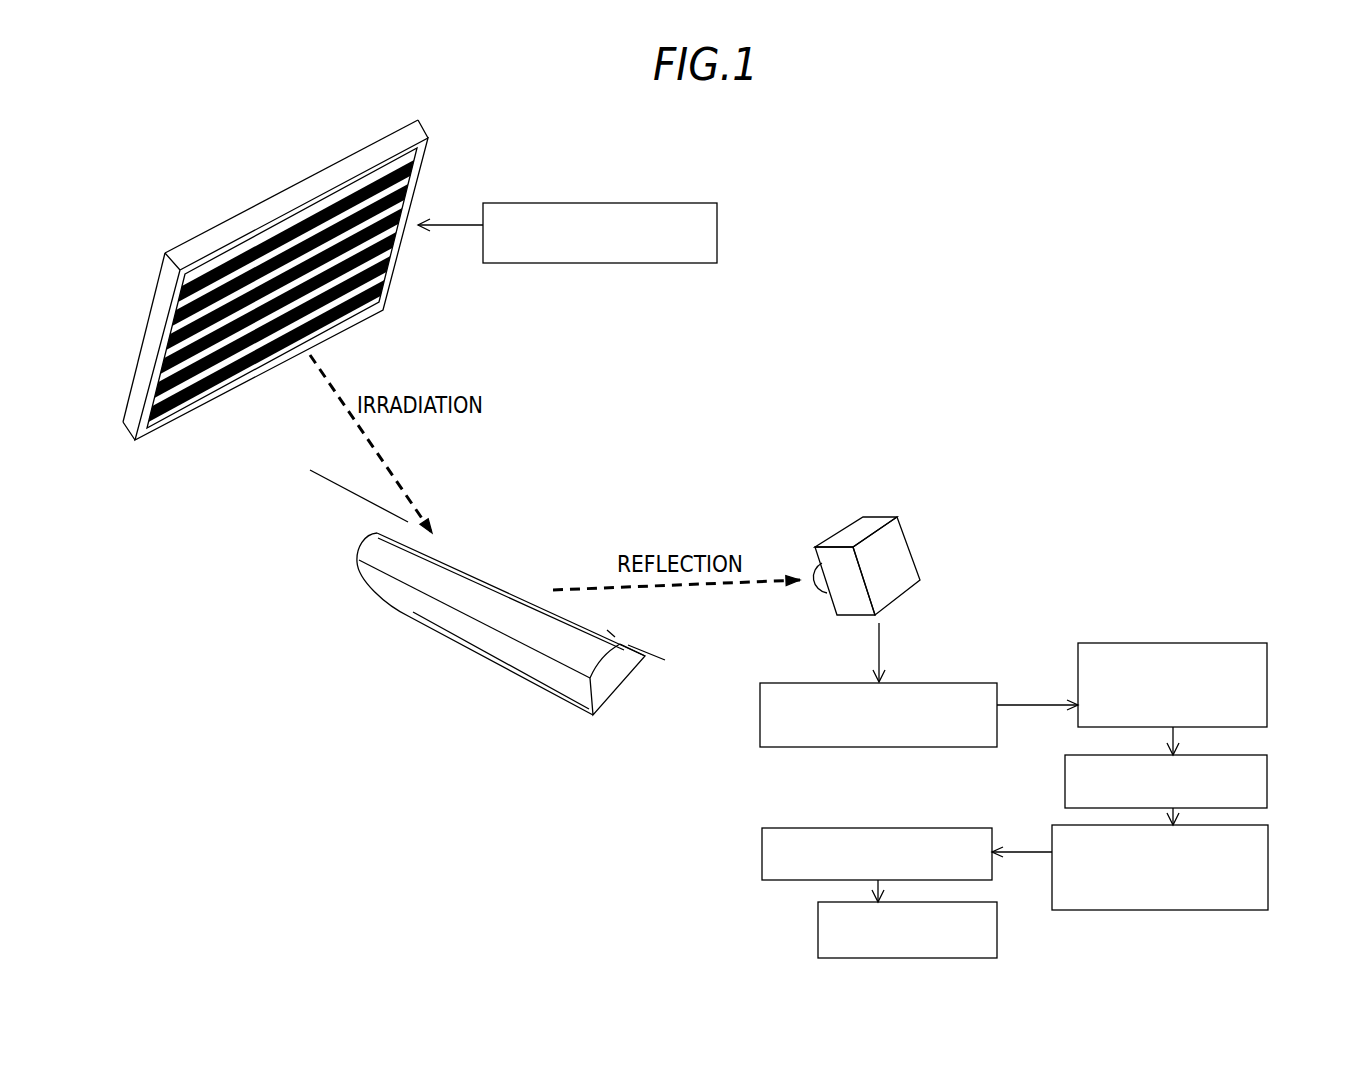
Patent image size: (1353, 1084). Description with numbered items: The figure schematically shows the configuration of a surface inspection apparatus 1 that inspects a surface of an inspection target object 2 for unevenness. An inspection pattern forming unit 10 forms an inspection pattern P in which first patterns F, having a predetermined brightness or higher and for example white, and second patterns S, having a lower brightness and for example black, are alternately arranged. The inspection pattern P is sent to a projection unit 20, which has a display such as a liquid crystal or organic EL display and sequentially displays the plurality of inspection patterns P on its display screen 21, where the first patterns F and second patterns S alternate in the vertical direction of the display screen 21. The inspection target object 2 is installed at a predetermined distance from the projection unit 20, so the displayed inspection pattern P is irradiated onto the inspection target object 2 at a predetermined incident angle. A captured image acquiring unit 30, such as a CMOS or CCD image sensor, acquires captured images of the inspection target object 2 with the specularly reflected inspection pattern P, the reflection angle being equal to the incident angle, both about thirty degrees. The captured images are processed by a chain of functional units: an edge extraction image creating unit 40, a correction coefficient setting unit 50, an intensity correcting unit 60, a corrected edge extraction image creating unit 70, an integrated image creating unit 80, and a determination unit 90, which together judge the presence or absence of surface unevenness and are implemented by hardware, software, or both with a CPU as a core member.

The surface inspection apparatus 1 is at (784, 314).
The inspection target object 2 is at (463, 578).
The inspection pattern forming unit 10 is at (595, 203).
The projection unit 20 is at (200, 243).
The display screen 21 is at (425, 160).
The captured image acquiring unit 30 is at (897, 537).
The edge extraction image creating unit 40 is at (937, 683).
The correction coefficient setting unit 50 is at (1267, 703).
The intensity correcting unit 60 is at (1268, 775).
The corrected edge extraction image creating unit 70 is at (1270, 852).
The integrated image creating unit 80 is at (932, 828).
The determination unit 90 is at (818, 920).
The second pattern S is at (400, 243).
The first pattern F is at (175, 330).
The inspection pattern P is at (207, 415).